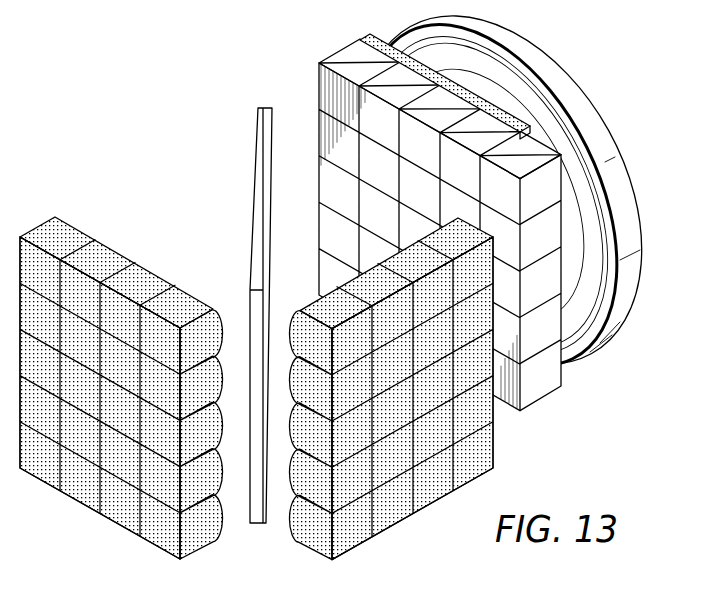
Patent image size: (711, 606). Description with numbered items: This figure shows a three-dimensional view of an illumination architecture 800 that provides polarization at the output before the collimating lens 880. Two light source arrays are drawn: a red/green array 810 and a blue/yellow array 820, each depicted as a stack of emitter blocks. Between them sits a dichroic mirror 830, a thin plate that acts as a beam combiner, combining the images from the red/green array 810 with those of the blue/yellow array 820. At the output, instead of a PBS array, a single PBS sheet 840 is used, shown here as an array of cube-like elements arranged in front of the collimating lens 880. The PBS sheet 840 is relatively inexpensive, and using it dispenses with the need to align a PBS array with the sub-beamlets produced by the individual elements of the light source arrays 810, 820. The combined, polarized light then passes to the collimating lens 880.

The illumination architecture 800 is at (130, 98).
The red/green array 810 is at (185, 584).
The blue/yellow array 820 is at (496, 487).
The dichroic mirror 830 is at (261, 166).
The PBS sheet 840 is at (357, 27).
The collimating lens 880 is at (551, 74).